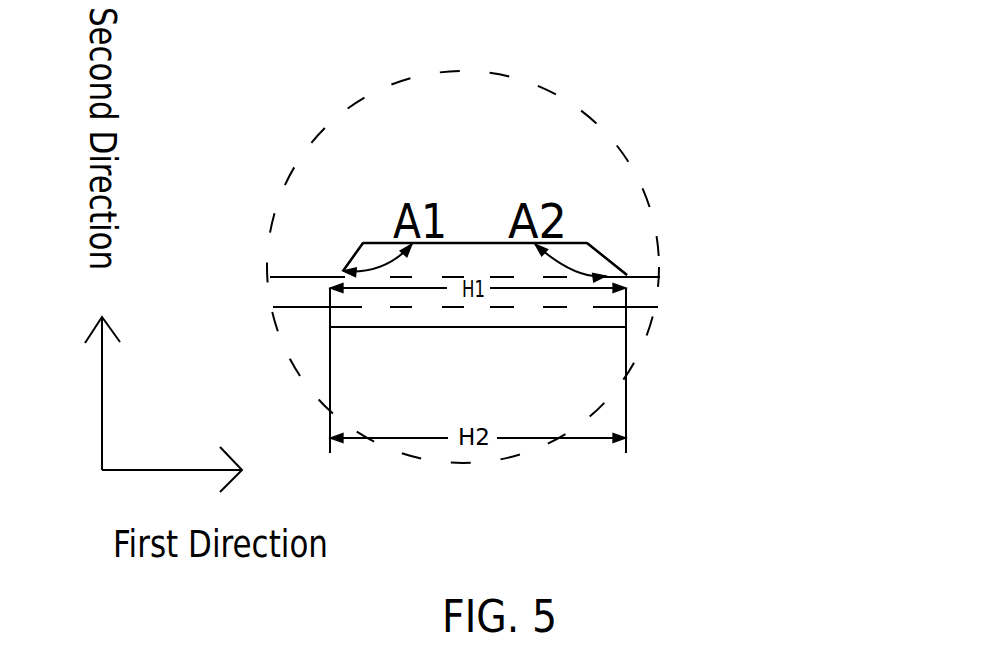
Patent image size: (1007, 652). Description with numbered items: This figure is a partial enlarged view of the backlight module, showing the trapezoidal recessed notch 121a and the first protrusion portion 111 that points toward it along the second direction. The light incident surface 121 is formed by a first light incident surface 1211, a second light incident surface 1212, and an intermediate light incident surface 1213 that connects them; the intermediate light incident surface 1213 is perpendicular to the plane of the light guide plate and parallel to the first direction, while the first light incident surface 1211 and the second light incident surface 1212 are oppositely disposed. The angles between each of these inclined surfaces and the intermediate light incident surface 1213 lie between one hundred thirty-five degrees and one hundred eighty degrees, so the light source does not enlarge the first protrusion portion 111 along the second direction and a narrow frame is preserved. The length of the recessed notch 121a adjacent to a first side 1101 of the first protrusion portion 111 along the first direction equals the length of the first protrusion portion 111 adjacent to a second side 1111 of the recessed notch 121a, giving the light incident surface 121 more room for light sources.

The first protrusion portion 111 is at (627, 312).
The light incident surface 121 is at (822, 277).
The first light incident surface 1211 is at (345, 268).
The second light incident surface 1212 is at (598, 262).
The intermediate light incident surface 1213 is at (480, 243).
The recessed notch 121a is at (484, 310).
The first side 1101 is at (403, 277).
The second side 1111 is at (610, 307).